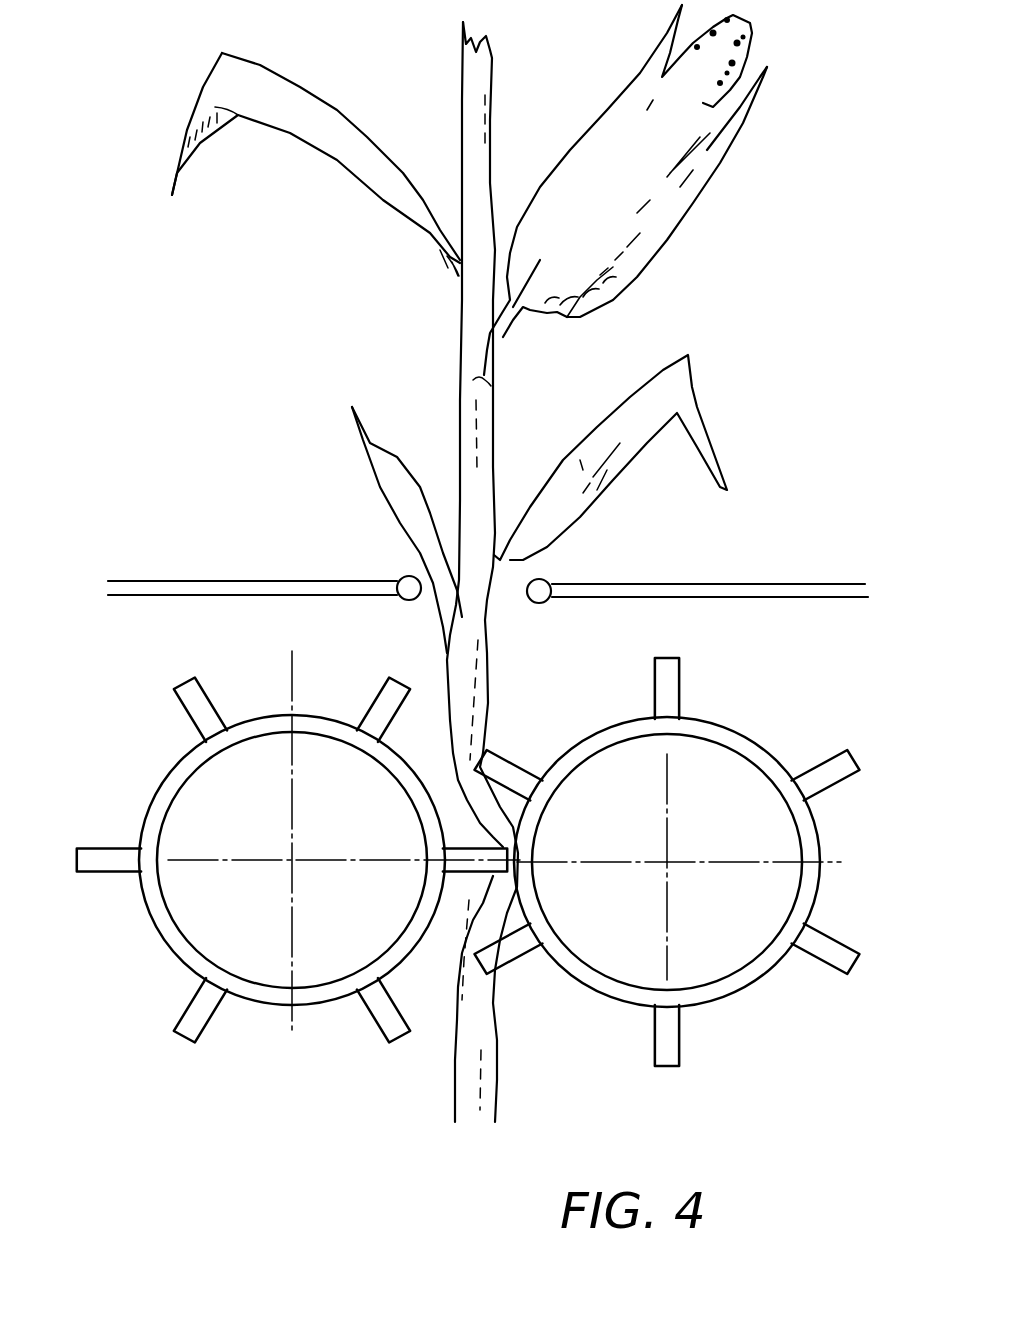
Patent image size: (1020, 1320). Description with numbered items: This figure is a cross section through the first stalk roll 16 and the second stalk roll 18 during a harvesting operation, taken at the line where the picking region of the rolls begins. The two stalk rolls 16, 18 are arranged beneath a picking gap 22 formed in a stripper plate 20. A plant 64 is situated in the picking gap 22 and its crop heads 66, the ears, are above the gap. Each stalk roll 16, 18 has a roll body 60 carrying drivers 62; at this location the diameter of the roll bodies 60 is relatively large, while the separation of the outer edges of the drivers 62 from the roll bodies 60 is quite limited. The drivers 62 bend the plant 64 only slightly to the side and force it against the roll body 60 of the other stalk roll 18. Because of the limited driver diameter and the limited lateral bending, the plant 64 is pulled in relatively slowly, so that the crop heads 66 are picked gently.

The first stalk roll 16 is at (284, 897).
The second stalk roll 18 is at (620, 1018).
The stripper plate 20 is at (145, 585).
The picking gap 22 is at (427, 580).
The roll body 60 is at (162, 923).
The driver 62 is at (192, 1020).
The plant 64 is at (468, 708).
The crop heads 66 is at (650, 210).